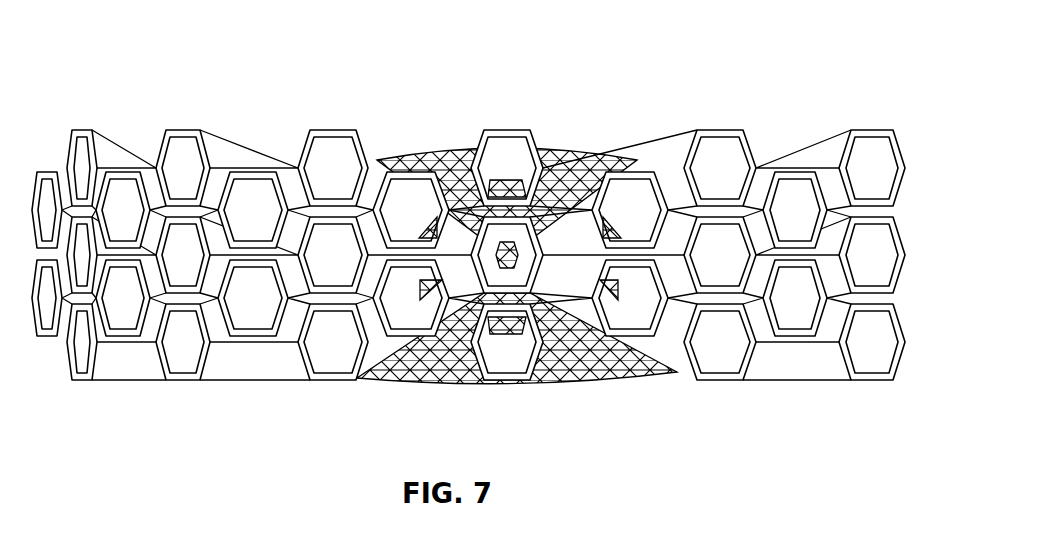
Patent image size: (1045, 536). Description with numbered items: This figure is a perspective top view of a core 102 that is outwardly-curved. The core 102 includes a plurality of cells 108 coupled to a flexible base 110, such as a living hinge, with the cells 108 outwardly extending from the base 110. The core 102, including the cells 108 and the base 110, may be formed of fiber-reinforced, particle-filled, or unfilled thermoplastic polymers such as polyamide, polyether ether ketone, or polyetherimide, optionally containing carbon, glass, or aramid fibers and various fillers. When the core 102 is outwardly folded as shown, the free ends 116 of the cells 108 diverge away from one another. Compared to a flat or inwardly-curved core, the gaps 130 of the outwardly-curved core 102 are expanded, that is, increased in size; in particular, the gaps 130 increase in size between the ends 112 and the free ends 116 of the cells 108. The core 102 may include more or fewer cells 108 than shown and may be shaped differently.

The core 102 is at (815, 76).
The cells 108 is at (182, 132).
The flexible base 110 is at (563, 160).
The ends 112 is at (792, 157).
The free ends 116 is at (84, 132).
The gaps 130 is at (592, 167).